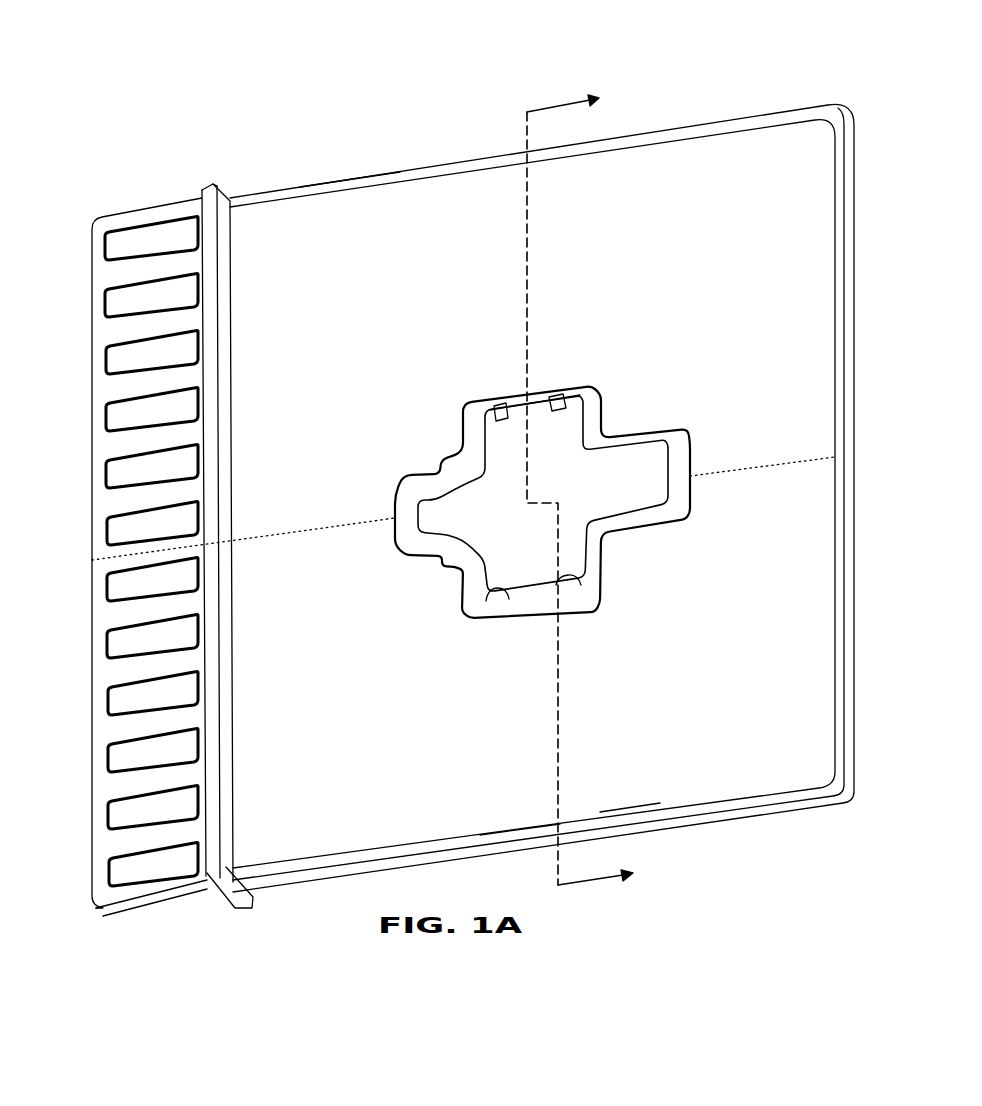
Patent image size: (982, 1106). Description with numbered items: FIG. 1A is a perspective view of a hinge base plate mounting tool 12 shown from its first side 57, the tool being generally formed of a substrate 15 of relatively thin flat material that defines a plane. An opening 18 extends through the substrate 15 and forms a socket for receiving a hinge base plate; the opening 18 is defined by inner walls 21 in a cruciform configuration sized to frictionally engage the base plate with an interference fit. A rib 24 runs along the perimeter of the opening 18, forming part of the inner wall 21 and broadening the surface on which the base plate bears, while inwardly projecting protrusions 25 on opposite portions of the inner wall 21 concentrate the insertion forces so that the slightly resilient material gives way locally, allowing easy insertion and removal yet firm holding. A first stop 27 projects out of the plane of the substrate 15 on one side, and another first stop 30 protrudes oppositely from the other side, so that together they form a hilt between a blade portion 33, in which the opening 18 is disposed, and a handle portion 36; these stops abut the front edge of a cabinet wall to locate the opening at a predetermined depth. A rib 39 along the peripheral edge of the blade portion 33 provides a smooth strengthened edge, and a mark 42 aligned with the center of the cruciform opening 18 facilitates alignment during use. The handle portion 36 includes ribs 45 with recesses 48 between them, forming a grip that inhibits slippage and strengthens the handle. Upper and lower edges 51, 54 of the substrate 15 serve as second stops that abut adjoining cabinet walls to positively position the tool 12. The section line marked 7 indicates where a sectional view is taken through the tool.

The hinge base plate mounting tool 12 is at (398, 112).
The substrate 15 is at (295, 333).
The opening 18 is at (553, 453).
The inner walls 21 is at (535, 404).
The rib 24 is at (630, 442).
The inwardly projecting protrusions 25 is at (566, 395).
The first stop 27 is at (213, 685).
The first stop 30 is at (253, 899).
The blade portion 33 is at (443, 703).
The handle portion 36 is at (160, 663).
The rib 39 is at (620, 820).
The mark 42 is at (733, 483).
The ribs 45 is at (173, 498).
The recesses 48 is at (122, 532).
The upper edge 51 is at (338, 180).
The lower edge 54 is at (512, 840).
The first side 57 is at (751, 186).
The section line 7- 7 is at (593, 486).